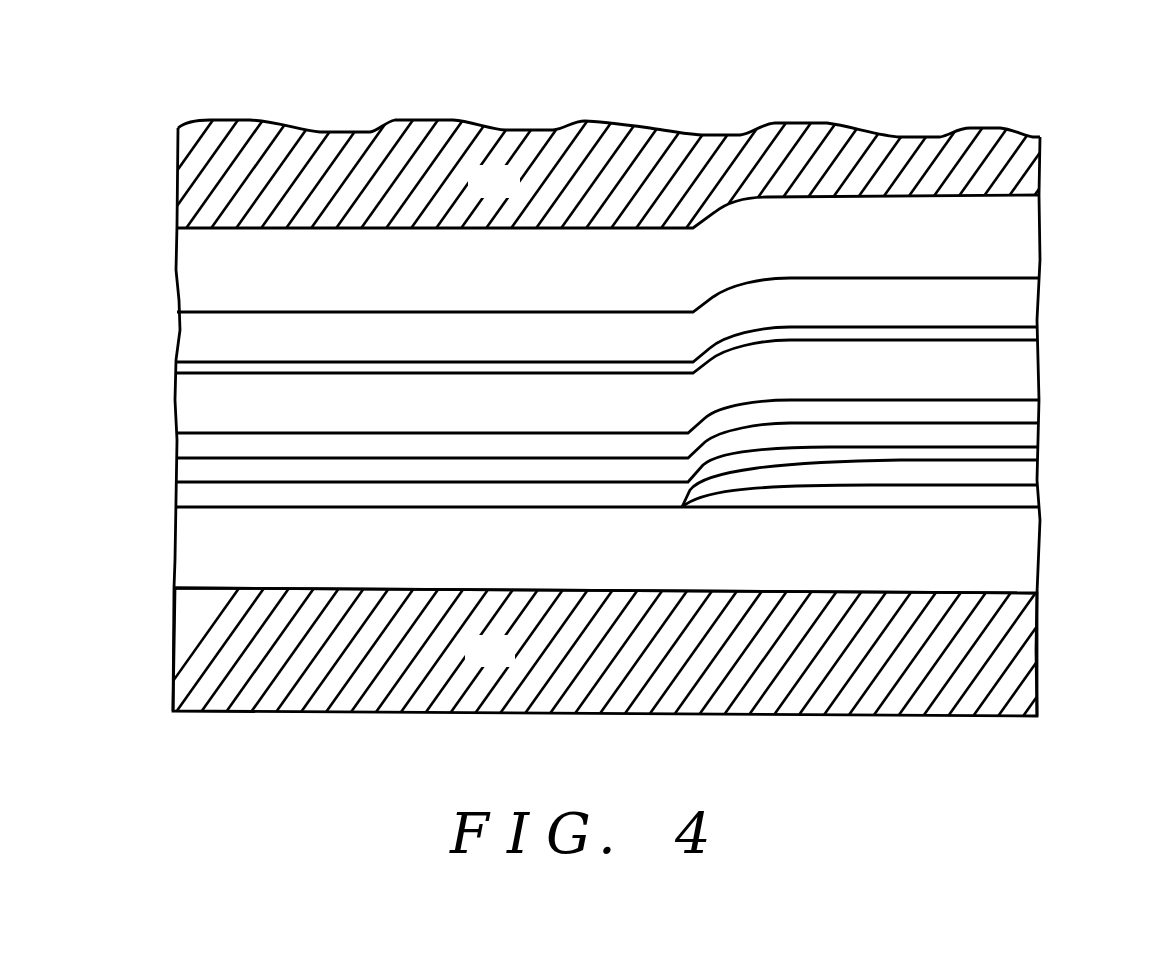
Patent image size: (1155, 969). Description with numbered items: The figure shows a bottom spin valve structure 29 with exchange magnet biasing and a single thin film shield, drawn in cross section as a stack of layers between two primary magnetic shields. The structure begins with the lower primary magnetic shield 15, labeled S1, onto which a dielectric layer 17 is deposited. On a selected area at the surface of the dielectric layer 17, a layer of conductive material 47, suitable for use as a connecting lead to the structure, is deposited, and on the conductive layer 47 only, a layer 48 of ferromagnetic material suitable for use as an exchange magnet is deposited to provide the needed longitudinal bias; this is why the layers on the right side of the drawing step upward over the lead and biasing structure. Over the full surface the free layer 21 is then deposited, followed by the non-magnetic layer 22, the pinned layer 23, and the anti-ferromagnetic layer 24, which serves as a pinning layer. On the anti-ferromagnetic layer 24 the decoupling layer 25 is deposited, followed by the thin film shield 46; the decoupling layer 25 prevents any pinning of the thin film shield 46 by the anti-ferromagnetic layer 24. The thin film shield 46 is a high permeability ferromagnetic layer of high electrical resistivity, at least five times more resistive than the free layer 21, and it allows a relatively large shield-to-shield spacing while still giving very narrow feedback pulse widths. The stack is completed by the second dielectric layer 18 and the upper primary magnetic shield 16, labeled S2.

The lower primary magnetic shield 15 is at (1013, 647).
The upper primary magnetic shield 16 is at (1027, 163).
The dielectric layer 17 is at (1013, 558).
The second dielectric layer 18 is at (1027, 222).
The free layer 21 is at (187, 492).
The non-magnetic layer 22 is at (187, 467).
The pinned layer 23 is at (193, 443).
The anti-ferromagnetic layer 24 is at (200, 395).
The decoupling layer 25 is at (205, 363).
The bottom spin valve structure 29 is at (940, 108).
The thin film shield 46 is at (203, 329).
The layer of conductive material 47 is at (1013, 497).
The exchange magnet layer 48 is at (1013, 473).